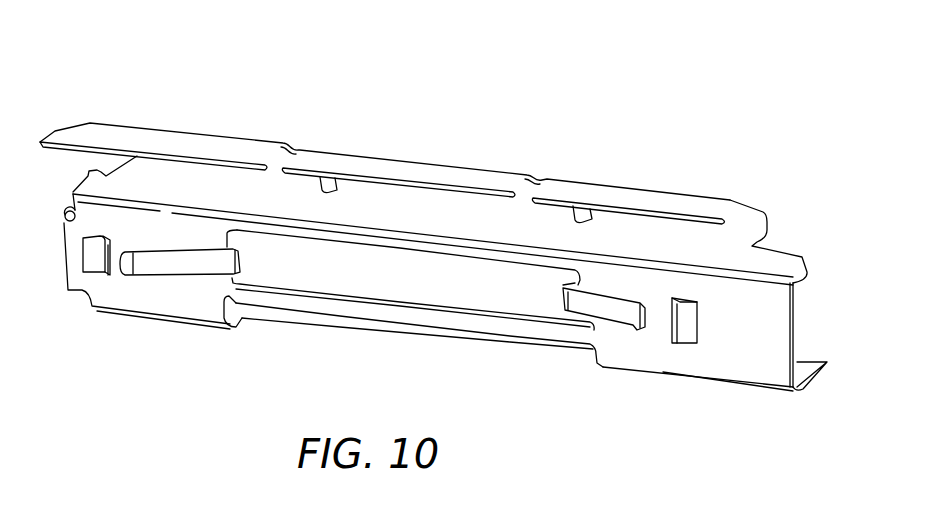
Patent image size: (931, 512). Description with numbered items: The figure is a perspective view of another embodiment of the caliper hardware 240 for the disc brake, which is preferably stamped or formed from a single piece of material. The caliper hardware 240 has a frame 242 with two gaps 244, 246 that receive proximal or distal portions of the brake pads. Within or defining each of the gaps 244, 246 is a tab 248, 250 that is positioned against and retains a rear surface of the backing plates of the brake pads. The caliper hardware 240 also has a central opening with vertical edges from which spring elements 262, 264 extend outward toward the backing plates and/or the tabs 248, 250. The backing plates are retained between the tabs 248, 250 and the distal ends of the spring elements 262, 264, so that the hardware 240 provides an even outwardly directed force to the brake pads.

The caliper hardware 240 is at (398, 105).
The frame 242 is at (504, 171).
The gap 244 is at (127, 287).
The gap 246 is at (643, 348).
The tab 248 is at (93, 257).
The tab 250 is at (685, 320).
The spring element 262 is at (183, 260).
The spring element 264 is at (595, 305).